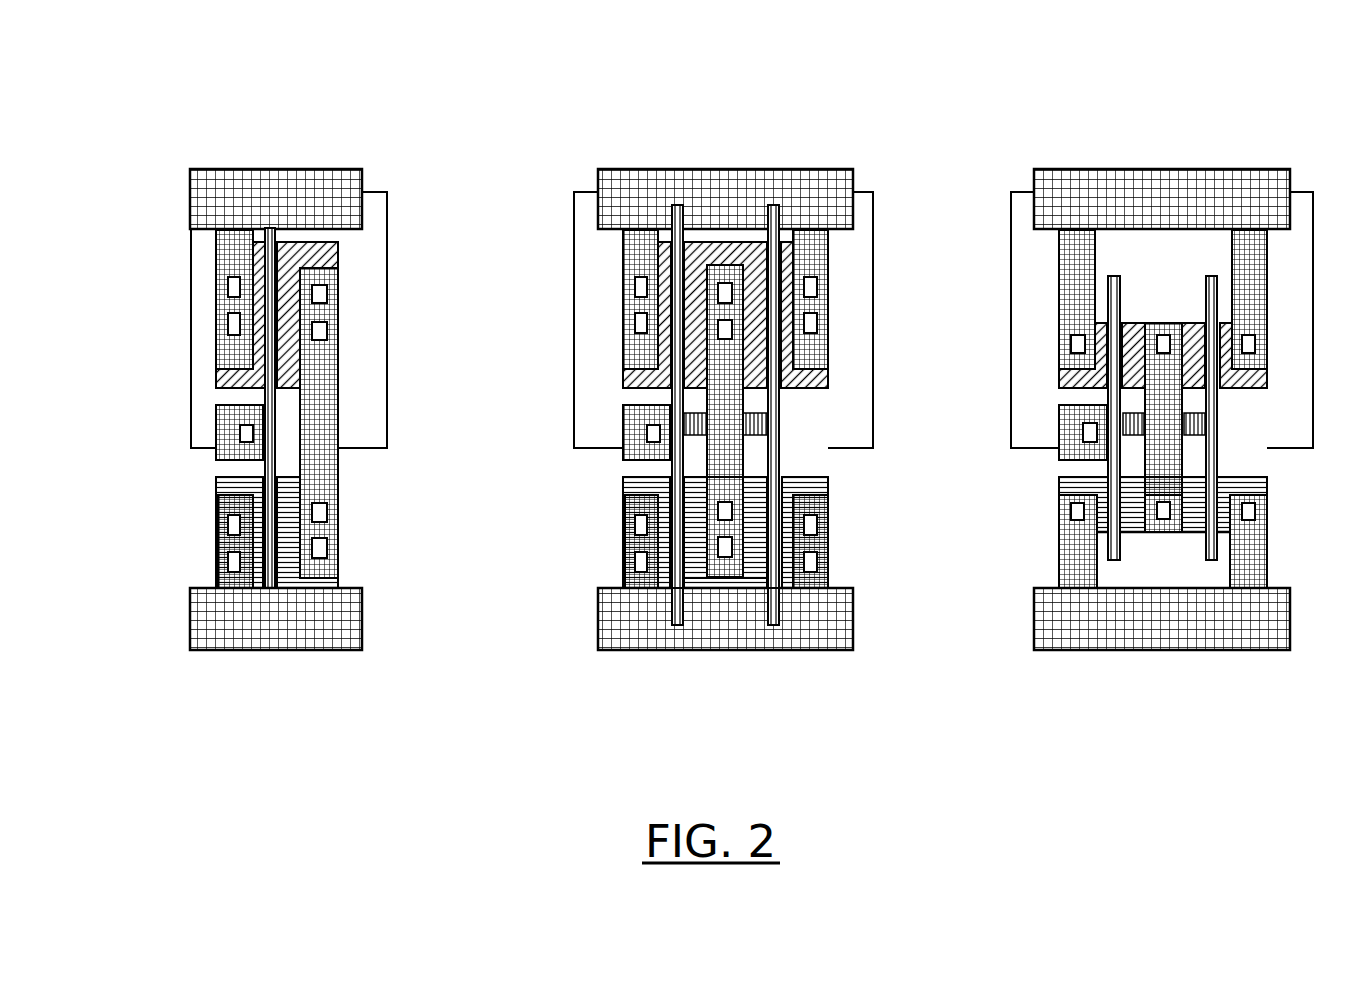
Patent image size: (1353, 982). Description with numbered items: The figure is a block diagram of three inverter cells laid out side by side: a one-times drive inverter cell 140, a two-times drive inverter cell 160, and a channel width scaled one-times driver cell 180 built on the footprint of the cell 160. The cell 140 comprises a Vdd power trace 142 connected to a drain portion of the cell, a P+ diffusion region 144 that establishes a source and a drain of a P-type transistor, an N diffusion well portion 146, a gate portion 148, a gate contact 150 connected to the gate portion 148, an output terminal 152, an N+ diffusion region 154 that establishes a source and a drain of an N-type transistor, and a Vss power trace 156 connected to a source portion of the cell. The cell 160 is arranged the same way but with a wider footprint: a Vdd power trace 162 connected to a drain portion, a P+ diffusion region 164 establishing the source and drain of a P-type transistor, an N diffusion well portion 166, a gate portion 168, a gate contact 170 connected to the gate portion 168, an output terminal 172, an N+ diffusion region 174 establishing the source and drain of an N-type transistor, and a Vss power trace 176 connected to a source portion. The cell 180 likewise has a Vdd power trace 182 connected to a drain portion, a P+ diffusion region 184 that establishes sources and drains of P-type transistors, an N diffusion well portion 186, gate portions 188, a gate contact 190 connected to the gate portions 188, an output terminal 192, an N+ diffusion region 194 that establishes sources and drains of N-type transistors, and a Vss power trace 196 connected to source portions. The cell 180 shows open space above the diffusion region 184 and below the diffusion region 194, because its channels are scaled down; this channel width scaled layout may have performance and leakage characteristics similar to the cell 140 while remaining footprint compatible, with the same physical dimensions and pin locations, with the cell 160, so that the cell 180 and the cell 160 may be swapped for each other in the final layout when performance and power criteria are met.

The cell 140 is at (277, 74).
The region 142 is at (238, 169).
The region 144 is at (335, 247).
The region 146 is at (199, 255).
The region 148 is at (260, 397).
The region 150 is at (218, 455).
The region 152 is at (332, 453).
The region 154 is at (337, 580).
The region 156 is at (236, 646).
The cell 160 is at (682, 74).
The region 162 is at (643, 169).
The region 164 is at (813, 372).
The region 166 is at (593, 255).
The region 168 is at (670, 397).
The region 170 is at (623, 455).
The region 172 is at (727, 397).
The region 174 is at (825, 485).
The region 176 is at (643, 646).
The cell 180 is at (1122, 74).
The region 182 is at (1080, 169).
The region 184 is at (1233, 387).
The region 186 is at (1030, 255).
The region 188 is at (1105, 397).
The region 190 is at (1060, 455).
The region 192 is at (1158, 525).
The region 194 is at (1267, 485).
The region 196 is at (1078, 646).